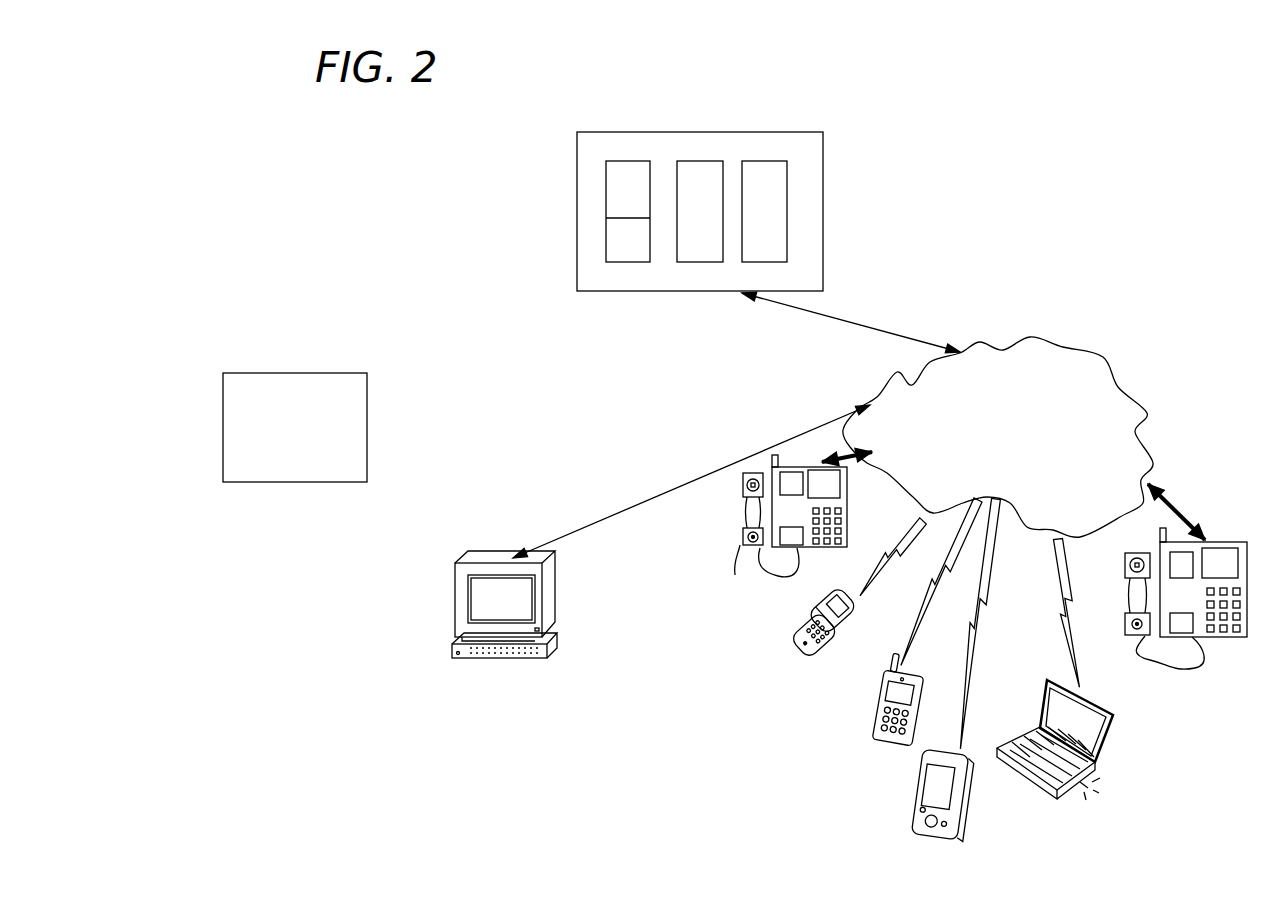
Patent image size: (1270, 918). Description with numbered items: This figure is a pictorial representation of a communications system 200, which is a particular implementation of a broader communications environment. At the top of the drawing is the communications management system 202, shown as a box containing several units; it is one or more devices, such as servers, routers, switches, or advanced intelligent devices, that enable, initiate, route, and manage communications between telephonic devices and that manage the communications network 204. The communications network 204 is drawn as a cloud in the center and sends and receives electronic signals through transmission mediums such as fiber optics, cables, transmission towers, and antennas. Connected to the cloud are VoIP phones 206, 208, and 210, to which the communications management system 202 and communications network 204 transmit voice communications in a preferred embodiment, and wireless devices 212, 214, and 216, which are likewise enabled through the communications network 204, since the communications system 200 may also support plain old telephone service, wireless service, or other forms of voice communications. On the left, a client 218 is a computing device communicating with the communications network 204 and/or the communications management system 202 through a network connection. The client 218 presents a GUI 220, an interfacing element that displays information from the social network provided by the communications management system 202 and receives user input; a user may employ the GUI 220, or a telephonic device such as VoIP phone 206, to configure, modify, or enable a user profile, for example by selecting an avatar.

The communications system 200 is at (264, 188).
The communications management system 202 is at (807, 146).
The communications network 204 is at (984, 461).
The VoIP phone 206 is at (786, 526).
The VoIP phone 208 is at (1085, 722).
The VoIP phone 210 is at (1245, 630).
The wireless device 212 is at (800, 648).
The wireless device 214 is at (881, 734).
The wireless device 216 is at (928, 832).
The client 218 is at (440, 646).
The GUI 220 is at (482, 600).